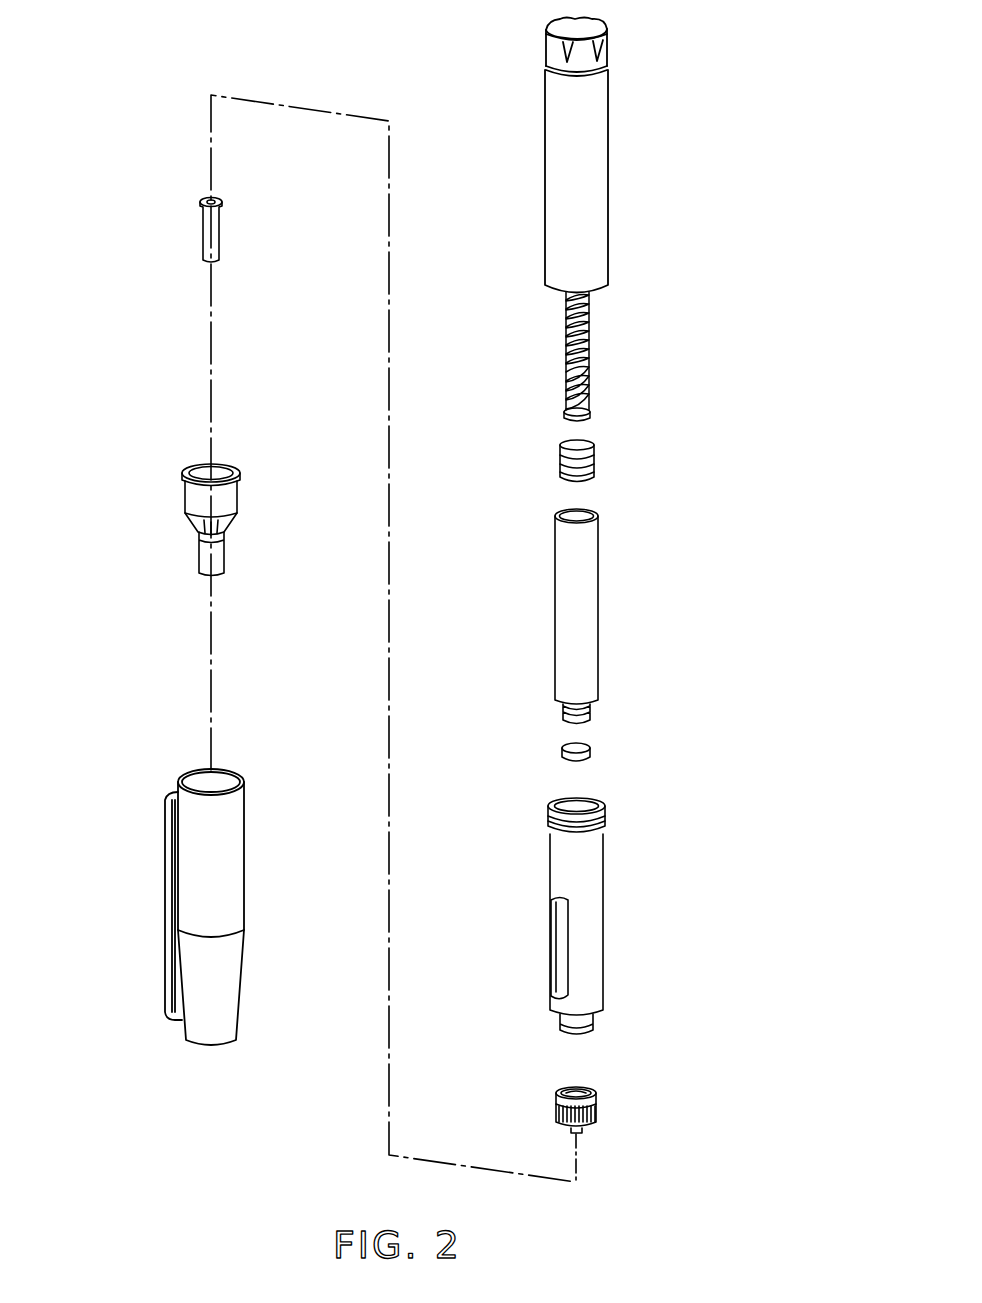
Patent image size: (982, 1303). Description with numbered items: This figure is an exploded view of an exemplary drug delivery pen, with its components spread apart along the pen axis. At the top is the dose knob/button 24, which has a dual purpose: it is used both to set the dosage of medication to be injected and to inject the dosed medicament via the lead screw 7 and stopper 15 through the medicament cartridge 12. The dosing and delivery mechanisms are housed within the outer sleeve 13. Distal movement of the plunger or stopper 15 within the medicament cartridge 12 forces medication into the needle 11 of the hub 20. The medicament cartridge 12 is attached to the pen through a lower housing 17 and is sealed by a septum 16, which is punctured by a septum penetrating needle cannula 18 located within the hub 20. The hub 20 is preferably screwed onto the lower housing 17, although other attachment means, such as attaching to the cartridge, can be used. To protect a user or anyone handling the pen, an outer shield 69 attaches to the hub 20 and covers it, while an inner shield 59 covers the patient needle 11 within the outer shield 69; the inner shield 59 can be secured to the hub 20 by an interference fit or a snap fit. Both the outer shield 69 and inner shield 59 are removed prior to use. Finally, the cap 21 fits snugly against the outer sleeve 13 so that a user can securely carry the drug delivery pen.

The dose knob/button 24 is at (609, 52).
The outer sleeve 13 is at (609, 233).
The lead screw 7 is at (587, 378).
The stopper 15 is at (595, 460).
The medicament cartridge 12 is at (598, 655).
The septum 16 is at (591, 748).
The lower housing 17 is at (603, 928).
The hub 20 is at (598, 1102).
The septum penetrating needle cannula 18 is at (575, 1100).
The needle 11 is at (578, 1145).
The inner shield 59 is at (203, 236).
The outer shield 69 is at (185, 492).
The cap 21 is at (245, 890).